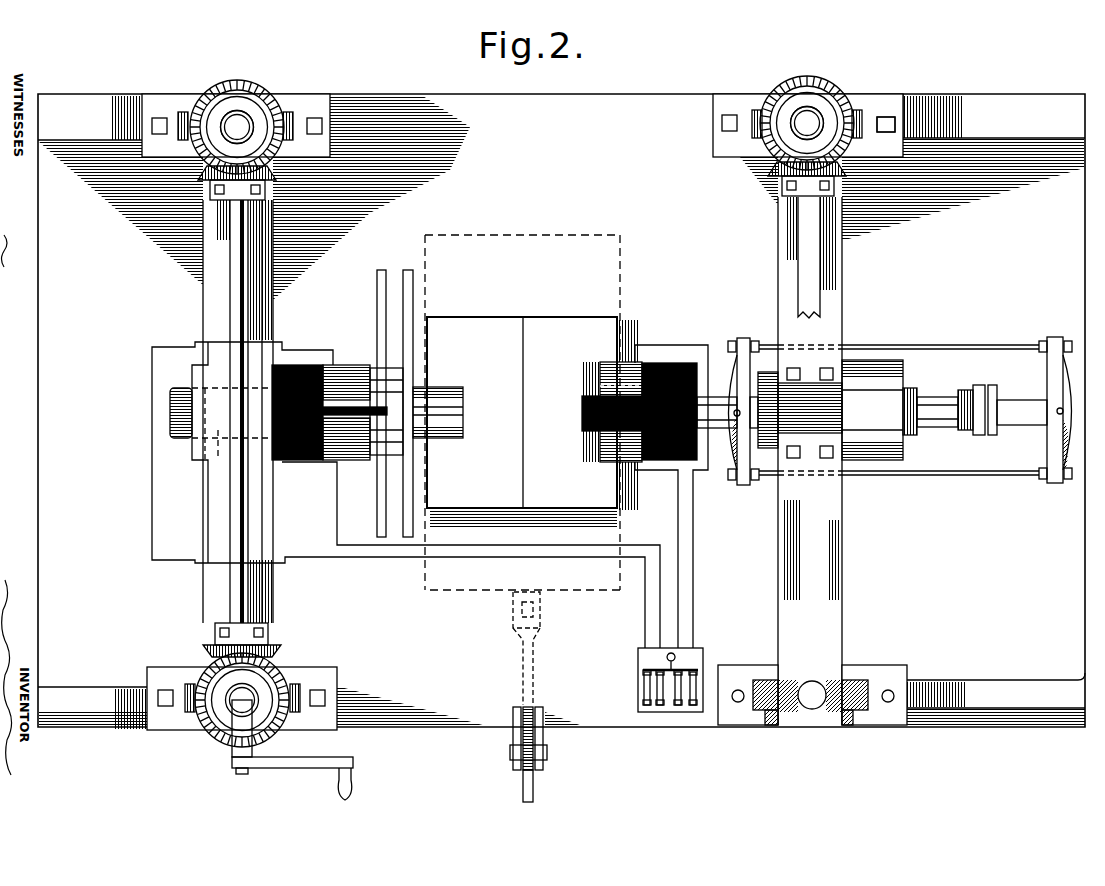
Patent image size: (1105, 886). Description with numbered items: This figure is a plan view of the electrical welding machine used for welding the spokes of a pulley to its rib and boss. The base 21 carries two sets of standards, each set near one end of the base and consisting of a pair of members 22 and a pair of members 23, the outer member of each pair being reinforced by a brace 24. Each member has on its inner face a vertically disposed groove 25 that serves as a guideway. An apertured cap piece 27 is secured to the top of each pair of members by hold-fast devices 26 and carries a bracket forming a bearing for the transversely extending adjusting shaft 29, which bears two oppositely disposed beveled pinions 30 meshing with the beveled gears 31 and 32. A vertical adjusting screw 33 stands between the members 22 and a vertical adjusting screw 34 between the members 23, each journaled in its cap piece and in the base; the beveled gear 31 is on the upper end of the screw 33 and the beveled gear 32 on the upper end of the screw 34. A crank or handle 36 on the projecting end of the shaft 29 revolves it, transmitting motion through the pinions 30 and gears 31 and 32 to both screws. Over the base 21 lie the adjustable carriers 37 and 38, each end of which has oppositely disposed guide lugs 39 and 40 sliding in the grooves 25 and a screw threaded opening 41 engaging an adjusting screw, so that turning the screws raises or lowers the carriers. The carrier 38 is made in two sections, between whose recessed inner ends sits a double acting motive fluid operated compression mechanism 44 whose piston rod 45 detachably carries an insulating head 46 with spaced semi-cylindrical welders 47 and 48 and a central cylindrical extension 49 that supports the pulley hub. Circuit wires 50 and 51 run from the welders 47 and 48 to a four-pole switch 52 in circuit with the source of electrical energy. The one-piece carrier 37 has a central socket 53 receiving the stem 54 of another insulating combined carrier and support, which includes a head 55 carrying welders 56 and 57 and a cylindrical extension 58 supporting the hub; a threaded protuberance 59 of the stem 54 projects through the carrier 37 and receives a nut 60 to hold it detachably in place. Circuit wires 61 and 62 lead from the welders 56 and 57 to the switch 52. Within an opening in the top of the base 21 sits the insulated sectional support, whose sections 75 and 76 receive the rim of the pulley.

The base 21 is at (561, 411).
The standard members 22 is at (882, 100).
The standard members 23 is at (884, 665).
The brace 24 is at (985, 118).
The groove 25 is at (760, 680).
The hold-fast devices 26 is at (893, 118).
The cap piece 27 is at (310, 105).
The adjusting shaft 29 is at (812, 258).
The beveled pinions 30 is at (822, 150).
The beveled gear 31 is at (243, 80).
The beveled gear 32 is at (210, 735).
The adjusting screw 33 is at (250, 122).
The adjusting screw 34 is at (815, 705).
The crank or handle 36 is at (293, 768).
The adjustable carrier 37 is at (273, 590).
The adjustable carrier 38 is at (810, 461).
The guide lug 39 is at (772, 705).
The guide lug 40 is at (855, 705).
The screw threaded opening 41 is at (810, 708).
The compression mechanism 44 is at (911, 410).
The piston rod 45 is at (722, 352).
The head 46 is at (668, 363).
The welder 47 is at (600, 375).
The welder 48 is at (600, 448).
The cylindrical extension 49 is at (598, 395).
The circuit wire 50 is at (693, 515).
The circuit wire 51 is at (656, 555).
The four-pole switch 52 is at (700, 648).
The socket 53 is at (205, 388).
The stem 54 is at (205, 460).
The head 55 is at (302, 365).
The welder 56 is at (350, 365).
The welder 57 is at (357, 460).
The cylindrical extension 58 is at (387, 412).
The threaded protuberance 59 is at (192, 438).
The nut 60 is at (170, 407).
The circuit wire 61 is at (152, 530).
The circuit wire 62 is at (362, 547).
The support section 75 is at (570, 412).
The support section 76 is at (522, 412).